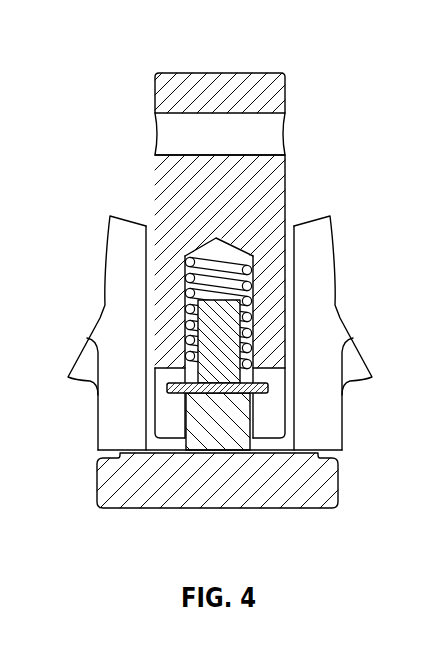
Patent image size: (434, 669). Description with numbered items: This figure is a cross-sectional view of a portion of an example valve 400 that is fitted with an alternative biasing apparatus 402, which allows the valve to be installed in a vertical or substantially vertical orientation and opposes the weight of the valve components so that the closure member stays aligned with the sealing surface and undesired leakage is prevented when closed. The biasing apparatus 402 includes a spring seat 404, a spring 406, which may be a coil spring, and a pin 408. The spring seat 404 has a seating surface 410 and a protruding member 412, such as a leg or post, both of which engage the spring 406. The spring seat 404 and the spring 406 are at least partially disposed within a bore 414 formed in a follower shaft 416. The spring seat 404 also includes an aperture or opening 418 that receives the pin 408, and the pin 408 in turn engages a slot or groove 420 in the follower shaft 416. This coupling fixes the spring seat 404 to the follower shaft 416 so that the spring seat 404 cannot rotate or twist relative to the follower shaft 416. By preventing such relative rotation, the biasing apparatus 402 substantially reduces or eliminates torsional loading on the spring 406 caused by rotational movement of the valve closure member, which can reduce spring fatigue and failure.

The valve 400 is at (131, 37).
The biasing apparatus 402 is at (158, 292).
The spring seat 404 is at (245, 423).
The spring 406 is at (250, 286).
The pin 408 is at (270, 385).
The seating surface 410 is at (250, 355).
The protruding member 412 is at (232, 333).
The bore 414 is at (188, 262).
The follower shaft 416 is at (265, 177).
The aperture or opening 418 is at (222, 393).
The slot or groove 420 is at (168, 407).